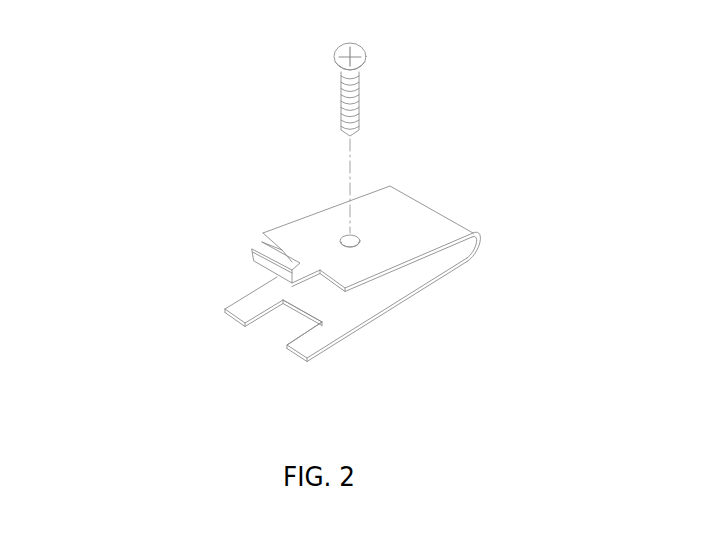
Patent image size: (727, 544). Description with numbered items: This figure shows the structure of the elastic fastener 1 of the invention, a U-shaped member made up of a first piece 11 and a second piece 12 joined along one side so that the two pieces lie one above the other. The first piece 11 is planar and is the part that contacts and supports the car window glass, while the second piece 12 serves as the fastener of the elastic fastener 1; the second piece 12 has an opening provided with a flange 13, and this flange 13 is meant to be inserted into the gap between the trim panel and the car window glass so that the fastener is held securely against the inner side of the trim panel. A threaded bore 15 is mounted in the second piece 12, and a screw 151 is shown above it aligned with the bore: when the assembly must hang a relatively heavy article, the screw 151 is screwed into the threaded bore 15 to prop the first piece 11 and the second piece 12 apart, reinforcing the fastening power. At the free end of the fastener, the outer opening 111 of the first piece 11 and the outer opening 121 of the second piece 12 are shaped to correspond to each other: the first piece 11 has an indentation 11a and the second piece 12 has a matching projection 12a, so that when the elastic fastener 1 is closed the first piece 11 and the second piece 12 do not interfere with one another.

The elastic fastener 1 is at (232, 207).
The first piece 11 is at (390, 310).
The indentation 11a is at (283, 327).
The outer opening 111 is at (233, 341).
The second piece 12 is at (413, 262).
The projection 12a is at (293, 263).
The outer opening 121 is at (227, 276).
The flange 13 is at (252, 251).
The threaded bore 15 is at (359, 235).
The screw 151 is at (360, 97).